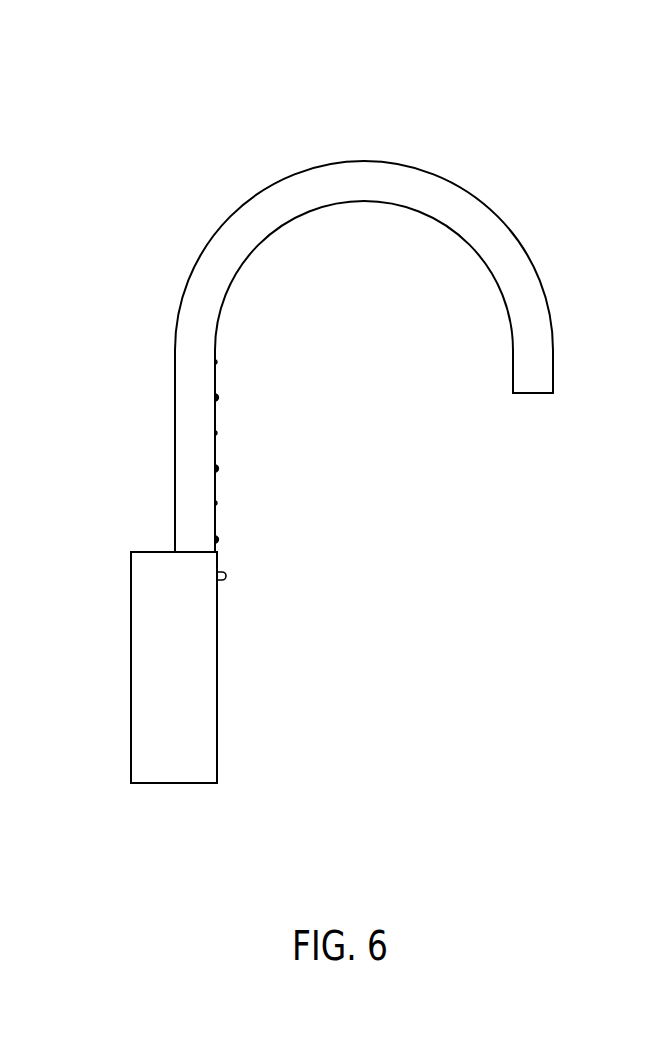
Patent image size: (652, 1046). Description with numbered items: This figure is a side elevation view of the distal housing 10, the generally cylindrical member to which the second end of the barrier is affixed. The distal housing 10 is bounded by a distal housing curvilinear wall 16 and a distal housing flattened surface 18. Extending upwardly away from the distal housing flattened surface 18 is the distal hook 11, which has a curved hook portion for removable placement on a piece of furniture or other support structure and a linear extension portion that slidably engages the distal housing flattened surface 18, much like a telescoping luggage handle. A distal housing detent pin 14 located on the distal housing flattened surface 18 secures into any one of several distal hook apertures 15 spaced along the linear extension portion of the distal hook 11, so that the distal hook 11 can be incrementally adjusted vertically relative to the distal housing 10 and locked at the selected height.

The distal housing 10 is at (553, 212).
The distal hook 11 is at (435, 203).
The distal housing detent pin 14 is at (227, 576).
The distal hook aperture 15 is at (217, 398).
The distal housing curvilinear wall 16 is at (131, 705).
The distal housing flattened surface 18 is at (219, 641).